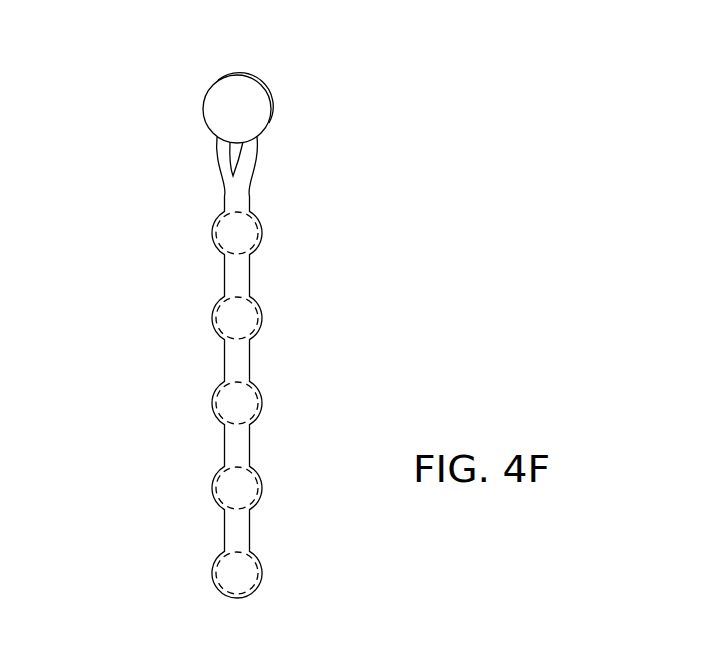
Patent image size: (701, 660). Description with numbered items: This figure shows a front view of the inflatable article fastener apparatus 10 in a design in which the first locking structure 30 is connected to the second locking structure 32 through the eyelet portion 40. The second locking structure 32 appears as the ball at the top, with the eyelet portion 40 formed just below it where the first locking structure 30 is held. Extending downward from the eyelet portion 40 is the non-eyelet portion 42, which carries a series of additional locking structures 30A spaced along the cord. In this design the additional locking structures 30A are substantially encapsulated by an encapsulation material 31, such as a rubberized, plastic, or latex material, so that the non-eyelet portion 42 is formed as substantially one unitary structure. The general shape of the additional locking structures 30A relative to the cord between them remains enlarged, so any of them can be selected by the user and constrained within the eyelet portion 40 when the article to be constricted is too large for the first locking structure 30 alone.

The inflatable article fastener apparatus 10 is at (490, 215).
The first locking structure 30 is at (243, 233).
The additional locking structures 30A is at (243, 321).
The encapsulation material 31 is at (227, 457).
The second locking structure 32 is at (250, 108).
The eyelet portion 40 is at (235, 172).
The non-eyelet portion 42 is at (212, 365).